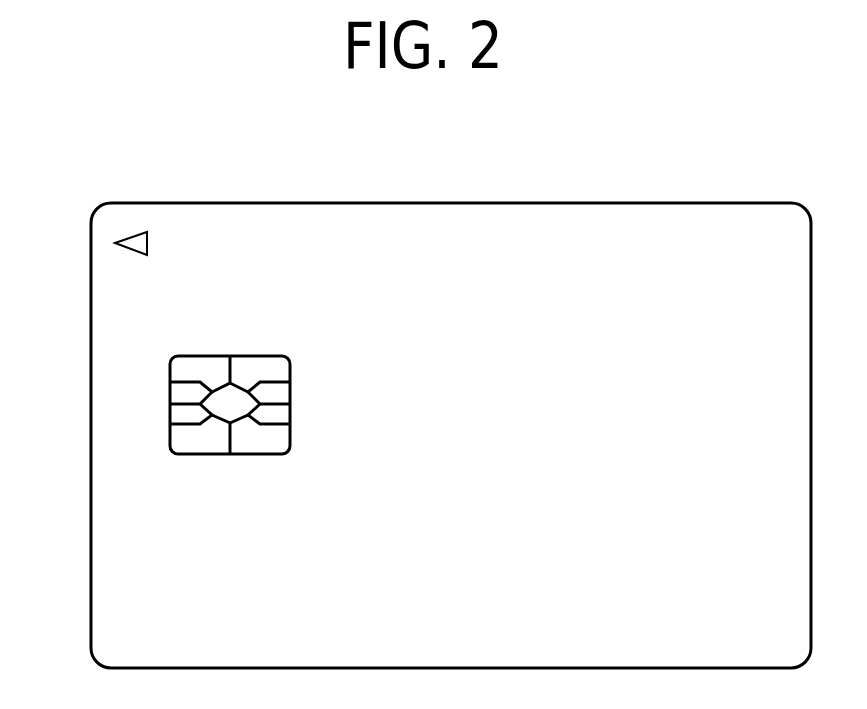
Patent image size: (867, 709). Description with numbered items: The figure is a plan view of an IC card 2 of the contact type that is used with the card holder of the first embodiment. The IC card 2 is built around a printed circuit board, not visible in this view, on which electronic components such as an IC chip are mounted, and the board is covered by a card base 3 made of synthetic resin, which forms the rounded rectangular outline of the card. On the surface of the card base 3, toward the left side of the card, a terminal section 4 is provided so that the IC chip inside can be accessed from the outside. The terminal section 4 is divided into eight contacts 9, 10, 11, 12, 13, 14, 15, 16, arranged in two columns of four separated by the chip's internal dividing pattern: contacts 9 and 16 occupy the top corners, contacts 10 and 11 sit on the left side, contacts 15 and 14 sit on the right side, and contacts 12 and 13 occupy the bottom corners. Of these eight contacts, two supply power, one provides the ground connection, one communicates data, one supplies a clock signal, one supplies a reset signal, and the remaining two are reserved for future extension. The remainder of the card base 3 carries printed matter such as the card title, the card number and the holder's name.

The IC card 2 is at (118, 161).
The card base 3 is at (100, 297).
The terminal section 4 is at (170, 443).
The contact 9 is at (196, 366).
The contact 10 is at (182, 390).
The contact 11 is at (183, 415).
The contact 12 is at (197, 443).
The contact 13 is at (252, 443).
The contact 14 is at (283, 413).
The contact 15 is at (283, 393).
The contact 16 is at (265, 368).